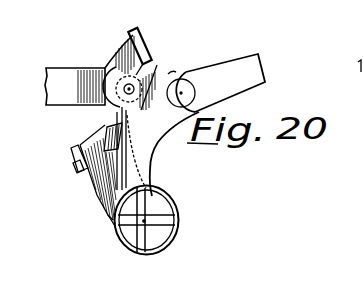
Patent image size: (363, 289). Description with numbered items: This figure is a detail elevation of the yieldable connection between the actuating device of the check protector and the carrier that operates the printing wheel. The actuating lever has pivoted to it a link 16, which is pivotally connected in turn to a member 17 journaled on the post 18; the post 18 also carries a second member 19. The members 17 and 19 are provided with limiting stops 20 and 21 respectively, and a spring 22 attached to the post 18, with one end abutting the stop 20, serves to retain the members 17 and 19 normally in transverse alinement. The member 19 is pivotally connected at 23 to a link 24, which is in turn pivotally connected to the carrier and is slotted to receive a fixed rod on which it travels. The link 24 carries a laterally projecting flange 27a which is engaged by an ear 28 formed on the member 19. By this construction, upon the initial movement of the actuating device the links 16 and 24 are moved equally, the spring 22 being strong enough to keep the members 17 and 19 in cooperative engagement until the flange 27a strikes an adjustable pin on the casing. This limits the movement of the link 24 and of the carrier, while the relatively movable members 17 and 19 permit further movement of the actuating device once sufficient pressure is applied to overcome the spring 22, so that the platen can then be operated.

The link 16 is at (216, 83).
The member 17 is at (156, 140).
The post 18 is at (156, 209).
The member 19 is at (108, 182).
The limiting stop 20 is at (107, 136).
The limiting stop 21 is at (80, 172).
The spring 22 is at (117, 182).
The pivotal connection 23 is at (133, 87).
The link 24 is at (88, 53).
The laterally projecting flange 27a is at (144, 50).
The ear 28 is at (131, 63).